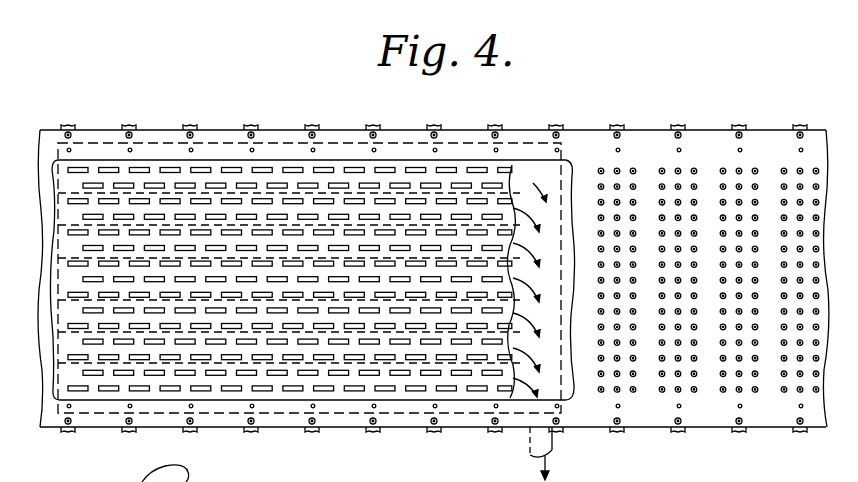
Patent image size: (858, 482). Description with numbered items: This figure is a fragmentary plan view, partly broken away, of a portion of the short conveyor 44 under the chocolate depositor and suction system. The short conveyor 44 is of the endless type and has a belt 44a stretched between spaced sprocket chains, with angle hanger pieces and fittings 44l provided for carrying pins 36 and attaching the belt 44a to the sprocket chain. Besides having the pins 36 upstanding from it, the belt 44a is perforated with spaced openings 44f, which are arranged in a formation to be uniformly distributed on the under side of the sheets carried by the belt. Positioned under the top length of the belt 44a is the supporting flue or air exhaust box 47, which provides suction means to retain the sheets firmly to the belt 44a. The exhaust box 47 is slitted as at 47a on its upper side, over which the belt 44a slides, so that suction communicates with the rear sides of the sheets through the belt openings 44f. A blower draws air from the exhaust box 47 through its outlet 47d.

The short conveyor 44 is at (568, 124).
The belt 44a is at (643, 150).
The angle hanger piece and fittings 44l is at (688, 124).
The spaced openings 44f is at (662, 377).
The pins 36 is at (800, 148).
The supporting flue or air exhaust box 47 is at (548, 184).
The slits 47a is at (328, 170).
The outlet 47d is at (530, 440).